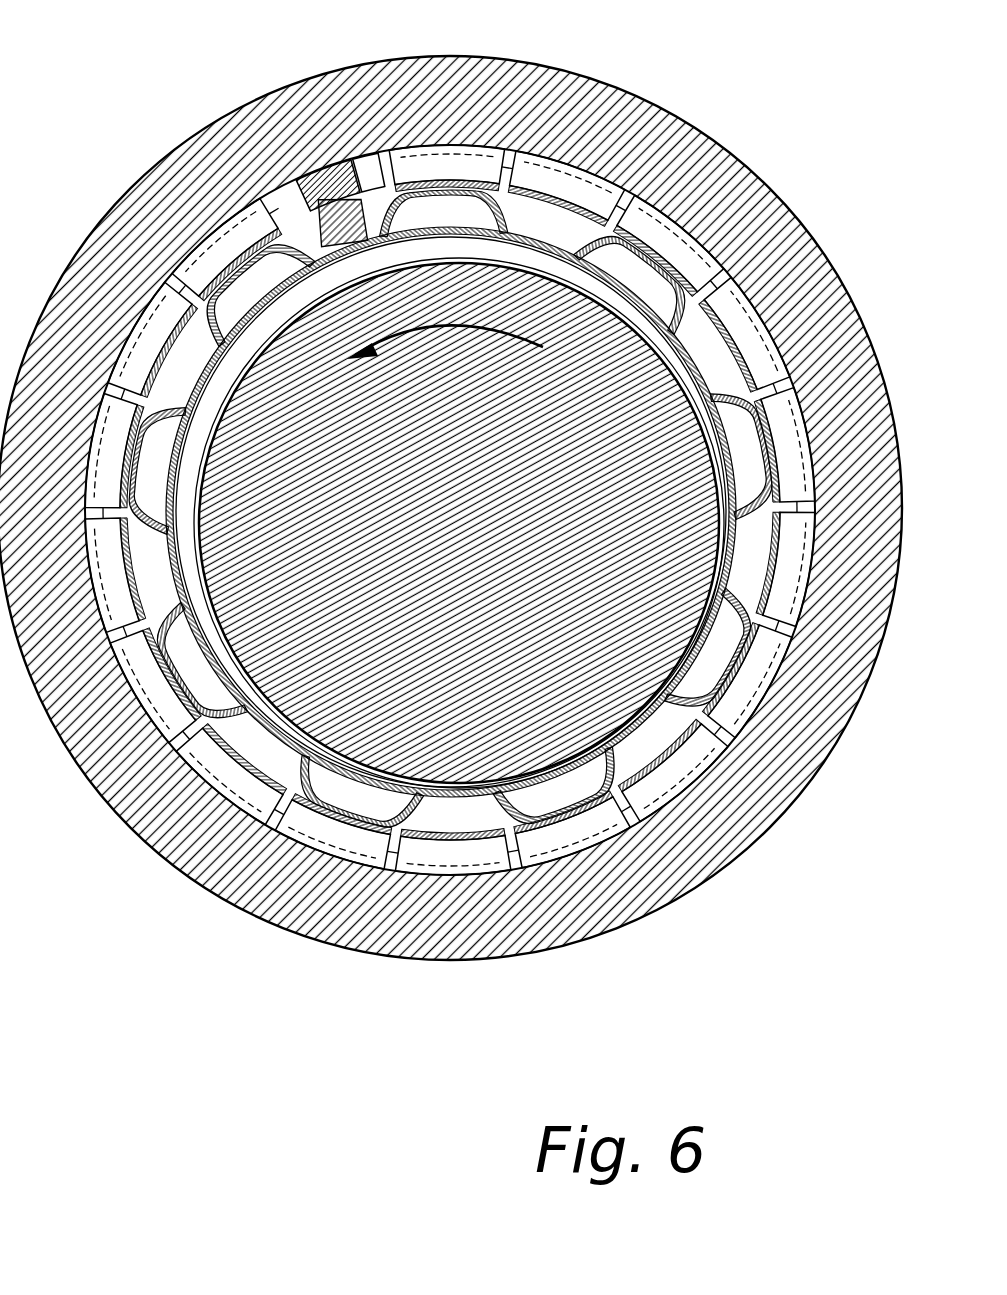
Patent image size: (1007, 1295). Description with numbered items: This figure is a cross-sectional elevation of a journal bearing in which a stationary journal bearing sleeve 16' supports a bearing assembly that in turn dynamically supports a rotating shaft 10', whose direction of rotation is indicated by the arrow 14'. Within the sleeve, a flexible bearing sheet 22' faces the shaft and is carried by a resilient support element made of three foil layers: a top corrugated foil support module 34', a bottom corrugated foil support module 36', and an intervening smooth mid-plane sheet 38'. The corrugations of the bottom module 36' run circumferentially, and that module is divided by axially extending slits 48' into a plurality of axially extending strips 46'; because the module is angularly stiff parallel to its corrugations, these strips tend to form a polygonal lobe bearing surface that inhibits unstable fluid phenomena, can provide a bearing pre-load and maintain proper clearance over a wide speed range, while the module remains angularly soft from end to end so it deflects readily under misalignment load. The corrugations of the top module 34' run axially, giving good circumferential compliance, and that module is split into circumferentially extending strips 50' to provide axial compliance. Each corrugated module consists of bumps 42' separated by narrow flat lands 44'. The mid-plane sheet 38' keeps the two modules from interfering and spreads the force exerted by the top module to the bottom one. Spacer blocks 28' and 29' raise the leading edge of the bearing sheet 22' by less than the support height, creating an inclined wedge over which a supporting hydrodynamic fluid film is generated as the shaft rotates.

The rotating shaft 10' is at (459, 523).
The direction of rotation arrow 14' is at (445, 319).
The stationary journal bearing sleeve 16' is at (451, 509).
The flexible bearing sheet 22' is at (251, 294).
The spacer block 28' is at (369, 234).
The spacer block 29' is at (326, 112).
The top corrugated foil support module 34' is at (763, 670).
The bottom corrugated foil support module 36' is at (166, 790).
The mid-plane sheet 38' is at (450, 510).
The bump 42' is at (338, 210).
The land 44' is at (602, 139).
The axially extending strip 46' is at (312, 565).
The axially extending slit 48' is at (462, 575).
The circumferentially extending strip 50' is at (451, 532).